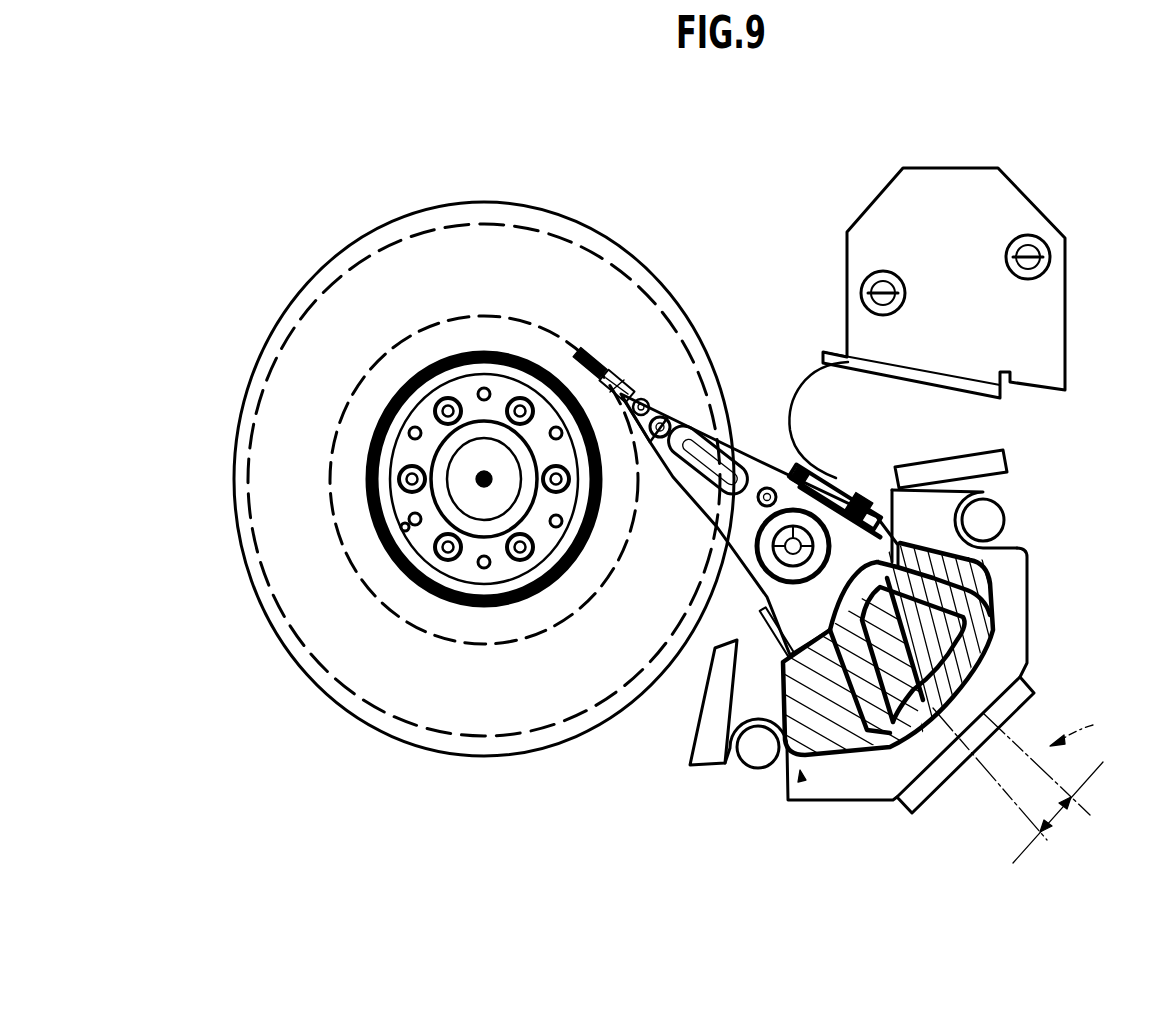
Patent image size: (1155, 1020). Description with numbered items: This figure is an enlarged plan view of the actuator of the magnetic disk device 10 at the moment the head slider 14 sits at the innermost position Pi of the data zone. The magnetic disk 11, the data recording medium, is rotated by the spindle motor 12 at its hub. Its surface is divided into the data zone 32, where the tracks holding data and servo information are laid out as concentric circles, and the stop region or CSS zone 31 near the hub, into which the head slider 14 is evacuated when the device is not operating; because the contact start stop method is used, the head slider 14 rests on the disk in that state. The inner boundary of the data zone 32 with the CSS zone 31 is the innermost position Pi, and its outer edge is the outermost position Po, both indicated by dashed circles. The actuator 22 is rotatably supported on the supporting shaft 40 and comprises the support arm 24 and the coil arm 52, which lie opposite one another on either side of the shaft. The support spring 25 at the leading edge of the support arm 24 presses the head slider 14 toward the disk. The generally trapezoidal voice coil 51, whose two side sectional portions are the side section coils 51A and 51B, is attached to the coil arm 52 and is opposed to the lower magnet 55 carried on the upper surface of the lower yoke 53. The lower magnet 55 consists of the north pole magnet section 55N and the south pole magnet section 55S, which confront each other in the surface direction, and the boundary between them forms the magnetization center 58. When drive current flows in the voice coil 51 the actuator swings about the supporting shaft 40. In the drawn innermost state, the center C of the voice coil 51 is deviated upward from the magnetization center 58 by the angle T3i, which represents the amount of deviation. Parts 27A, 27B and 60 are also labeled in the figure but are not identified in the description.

The magnetic disk device 10 is at (810, 141).
The magnetic disk 11 is at (556, 199).
The spindle motor 12 is at (486, 373).
The head slider 14 is at (605, 366).
The actuator 22 is at (757, 457).
The support arm 24 is at (693, 487).
The support spring 25 is at (632, 386).
The upper stopper 27A is at (1006, 502).
The lower stopper 27B is at (757, 762).
The stop region (CSS zone) 31 is at (394, 386).
The data zone 32 is at (454, 462).
The supporting shaft 40 is at (842, 492).
The voice coil 51 is at (983, 633).
The side section coil 51A is at (968, 488).
The side section coil 51B is at (850, 760).
The coil arm 52 is at (703, 735).
The lower yoke 53 is at (1030, 574).
The lower magnet 55 is at (800, 782).
The north pole magnet section 55N is at (1003, 544).
The south pole magnet section 55S is at (892, 786).
The magnetization center 58 is at (917, 655).
The flexible cable 60 is at (800, 378).
The outermost position Po is at (484, 464).
The innermost position Pi is at (535, 313).
The center of the voice coil C is at (1082, 728).
The angle T3i is at (1018, 785).